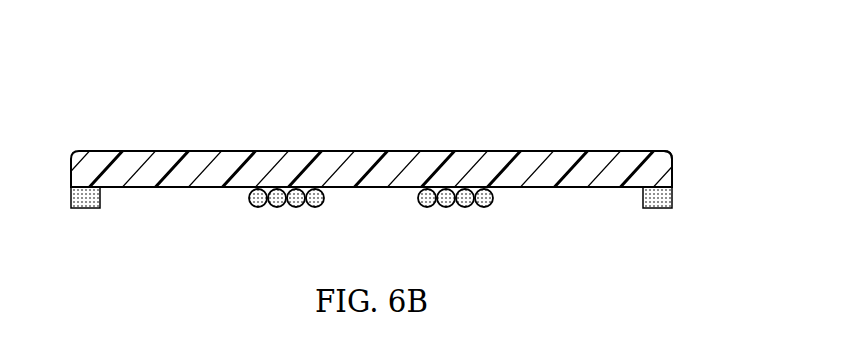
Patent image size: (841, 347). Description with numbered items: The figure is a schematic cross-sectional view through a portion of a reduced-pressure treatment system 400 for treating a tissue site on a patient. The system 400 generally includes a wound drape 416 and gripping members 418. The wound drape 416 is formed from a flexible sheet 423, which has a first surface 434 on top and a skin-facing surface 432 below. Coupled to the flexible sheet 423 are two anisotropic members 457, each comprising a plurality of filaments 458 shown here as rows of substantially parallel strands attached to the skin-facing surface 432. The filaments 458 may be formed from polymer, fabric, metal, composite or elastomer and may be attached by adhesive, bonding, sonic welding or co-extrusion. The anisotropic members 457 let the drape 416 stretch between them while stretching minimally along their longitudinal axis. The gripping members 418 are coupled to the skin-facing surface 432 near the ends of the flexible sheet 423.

The reduced-pressure treatment system 400 is at (99, 113).
The wound drape 416 is at (598, 151).
The first surface 434 is at (338, 158).
The skin-facing surface 432 is at (371, 188).
The flexible sheet 423 is at (672, 163).
The gripping member 418 is at (83, 209).
The filaments 458 is at (250, 197).
The anisotropic members 457 is at (277, 215).